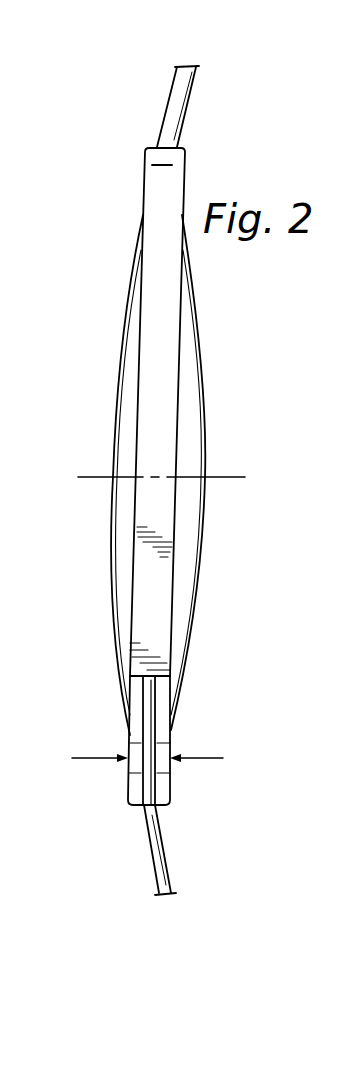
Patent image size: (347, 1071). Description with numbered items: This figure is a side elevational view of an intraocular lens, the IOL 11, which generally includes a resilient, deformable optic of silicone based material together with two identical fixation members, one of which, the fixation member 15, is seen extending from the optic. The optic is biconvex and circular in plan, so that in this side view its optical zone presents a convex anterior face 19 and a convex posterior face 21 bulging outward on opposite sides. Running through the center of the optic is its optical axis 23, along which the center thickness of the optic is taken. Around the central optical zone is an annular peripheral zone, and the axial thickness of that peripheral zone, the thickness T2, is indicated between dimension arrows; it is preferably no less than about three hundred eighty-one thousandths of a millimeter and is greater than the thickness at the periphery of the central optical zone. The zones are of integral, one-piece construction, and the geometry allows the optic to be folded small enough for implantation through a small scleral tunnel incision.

The IOL 11 is at (102, 157).
The fixation member 15 is at (180, 118).
The anterior face 19 is at (204, 387).
The posterior face 21 is at (122, 345).
The optical axis 23 is at (90, 478).
The thickness of the peripheral zone T2 is at (90, 758).